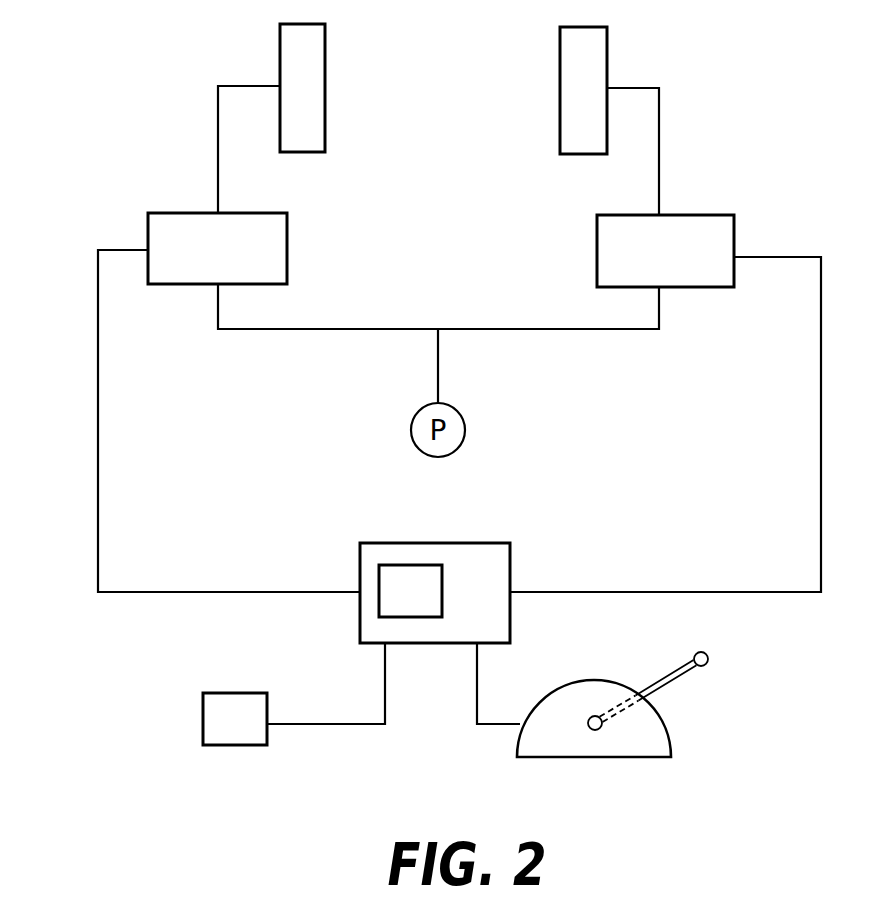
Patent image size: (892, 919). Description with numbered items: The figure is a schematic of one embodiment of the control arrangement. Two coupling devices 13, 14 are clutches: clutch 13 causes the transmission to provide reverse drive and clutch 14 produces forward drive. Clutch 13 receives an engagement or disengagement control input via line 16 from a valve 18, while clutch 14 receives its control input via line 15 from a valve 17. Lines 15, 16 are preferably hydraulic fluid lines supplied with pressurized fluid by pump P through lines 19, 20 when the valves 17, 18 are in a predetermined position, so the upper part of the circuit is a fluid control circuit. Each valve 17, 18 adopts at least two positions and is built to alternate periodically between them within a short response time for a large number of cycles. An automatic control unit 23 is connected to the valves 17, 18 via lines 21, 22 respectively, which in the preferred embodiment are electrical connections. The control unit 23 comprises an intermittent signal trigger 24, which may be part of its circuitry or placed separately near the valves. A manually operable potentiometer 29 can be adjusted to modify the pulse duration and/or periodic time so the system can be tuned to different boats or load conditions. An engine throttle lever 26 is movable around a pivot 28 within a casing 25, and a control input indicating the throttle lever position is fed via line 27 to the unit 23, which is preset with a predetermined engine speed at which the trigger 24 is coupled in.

The coupling device 13 is at (280, 60).
The coupling device 14 is at (607, 62).
The line 15 is at (659, 138).
The line 16 is at (218, 155).
The valve 17 is at (695, 222).
The valve 18 is at (156, 232).
The line 19 is at (602, 331).
The line 20 is at (265, 329).
The line 21 is at (821, 415).
The line 22 is at (98, 428).
The automatic control unit 23 is at (510, 578).
The intermittent signal trigger 24 is at (388, 592).
The casing 25 is at (628, 750).
The engine throttle lever 26 is at (708, 665).
The line 27 is at (472, 670).
The pivot 28 is at (580, 729).
The potentiometer 29 is at (218, 726).